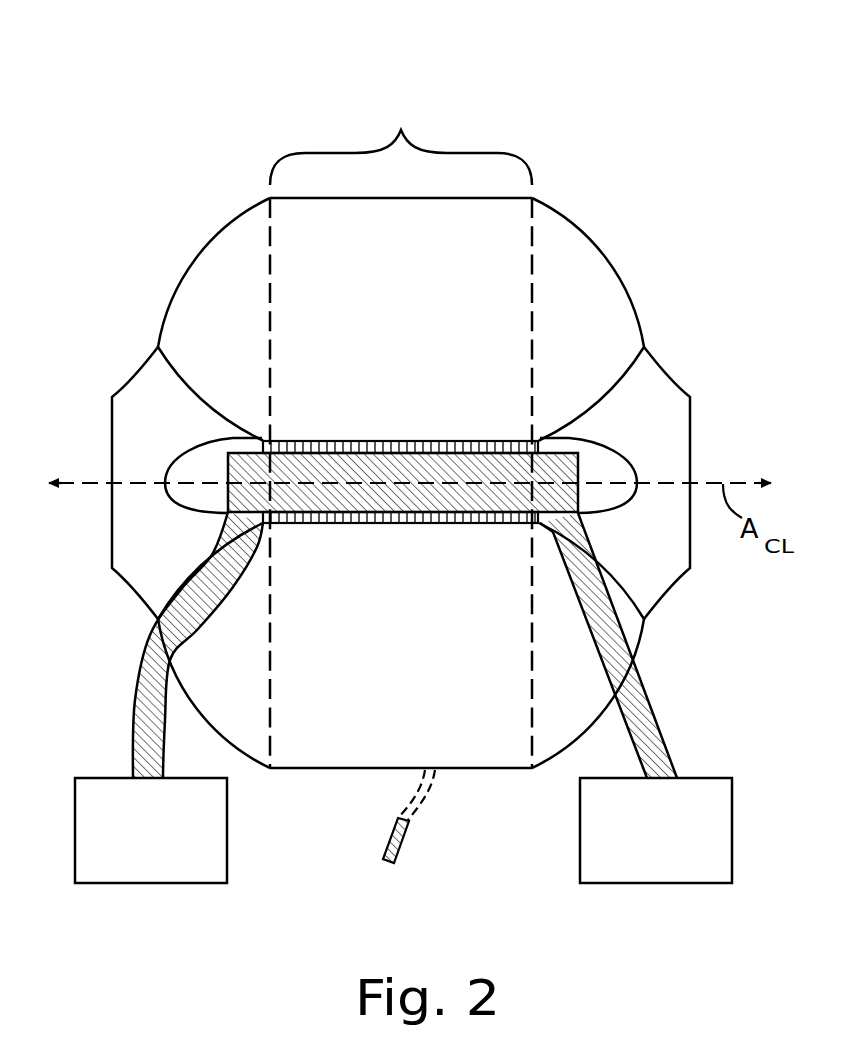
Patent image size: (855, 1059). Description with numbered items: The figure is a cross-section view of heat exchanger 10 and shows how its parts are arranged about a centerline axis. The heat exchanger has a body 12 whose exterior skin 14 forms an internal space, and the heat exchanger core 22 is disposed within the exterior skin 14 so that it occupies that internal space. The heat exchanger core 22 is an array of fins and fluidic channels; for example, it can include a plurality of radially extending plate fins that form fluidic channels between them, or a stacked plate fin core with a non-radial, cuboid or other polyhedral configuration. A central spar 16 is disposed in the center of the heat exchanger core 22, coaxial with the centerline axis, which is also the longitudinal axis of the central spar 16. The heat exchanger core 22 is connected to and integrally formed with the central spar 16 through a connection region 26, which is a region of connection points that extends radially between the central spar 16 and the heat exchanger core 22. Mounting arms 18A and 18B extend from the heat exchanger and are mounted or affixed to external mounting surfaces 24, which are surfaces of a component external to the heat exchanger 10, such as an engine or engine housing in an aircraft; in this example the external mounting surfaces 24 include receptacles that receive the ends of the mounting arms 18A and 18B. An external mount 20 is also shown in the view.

The heat exchanger 10 is at (186, 105).
The body 12 is at (584, 218).
The exterior skin 14 is at (183, 261).
The central spar 16 is at (228, 472).
The mounting arm 18A is at (142, 662).
The mounting arm 18B is at (650, 697).
The external mount 20 is at (400, 838).
The heat exchanger core 22 is at (401, 130).
The external mounting surfaces 24 is at (100, 778).
The connection region 26 is at (545, 445).